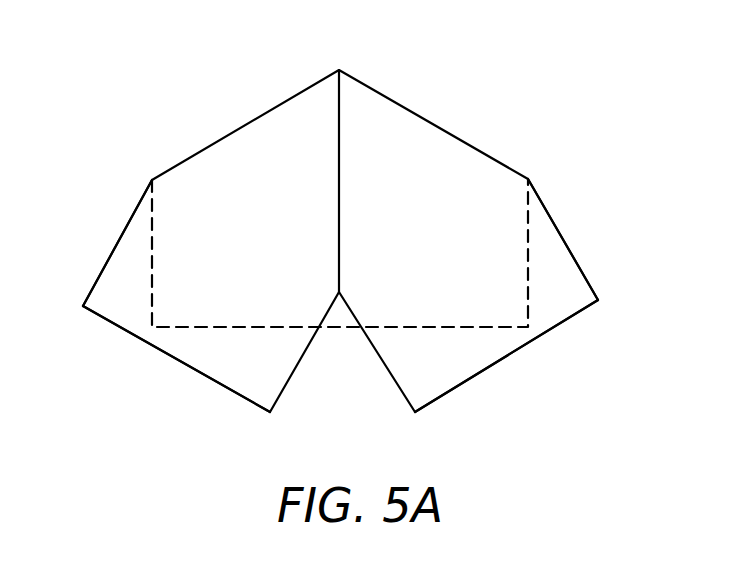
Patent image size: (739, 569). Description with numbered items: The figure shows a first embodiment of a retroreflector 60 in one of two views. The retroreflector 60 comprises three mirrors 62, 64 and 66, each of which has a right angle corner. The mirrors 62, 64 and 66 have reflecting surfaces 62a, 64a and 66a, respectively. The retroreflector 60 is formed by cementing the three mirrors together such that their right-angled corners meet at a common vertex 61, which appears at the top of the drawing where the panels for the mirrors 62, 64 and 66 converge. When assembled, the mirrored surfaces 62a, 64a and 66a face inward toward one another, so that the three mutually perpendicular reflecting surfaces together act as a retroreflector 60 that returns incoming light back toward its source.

The retroreflector 60 is at (480, 116).
The vertex 61 is at (339, 66).
The mirror 62 is at (237, 163).
The reflecting surface 62a is at (342, 311).
The mirror 64 is at (118, 260).
The reflecting surface 64a is at (239, 357).
The mirror 66 is at (558, 258).
The reflecting surface 66a is at (446, 357).